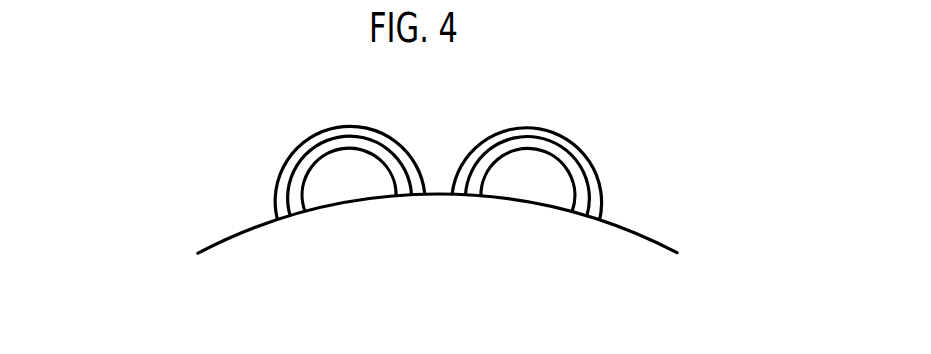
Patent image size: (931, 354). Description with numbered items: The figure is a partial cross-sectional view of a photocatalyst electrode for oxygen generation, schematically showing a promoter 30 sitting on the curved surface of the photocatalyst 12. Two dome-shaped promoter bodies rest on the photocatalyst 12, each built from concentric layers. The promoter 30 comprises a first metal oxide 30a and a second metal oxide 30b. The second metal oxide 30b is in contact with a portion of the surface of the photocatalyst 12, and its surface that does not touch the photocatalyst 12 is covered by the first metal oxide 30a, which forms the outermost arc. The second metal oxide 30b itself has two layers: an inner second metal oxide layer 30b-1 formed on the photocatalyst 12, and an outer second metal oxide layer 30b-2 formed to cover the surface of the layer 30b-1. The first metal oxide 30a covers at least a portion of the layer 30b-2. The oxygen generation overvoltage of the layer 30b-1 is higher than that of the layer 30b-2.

The photocatalyst 12 is at (615, 246).
The promoter 30 is at (437, 148).
The first metal oxide 30a is at (333, 145).
The second metal oxide 30b is at (437, 163).
The second metal oxide layer 30b-1 is at (330, 193).
The second metal oxide layer 30b-2 is at (323, 168).